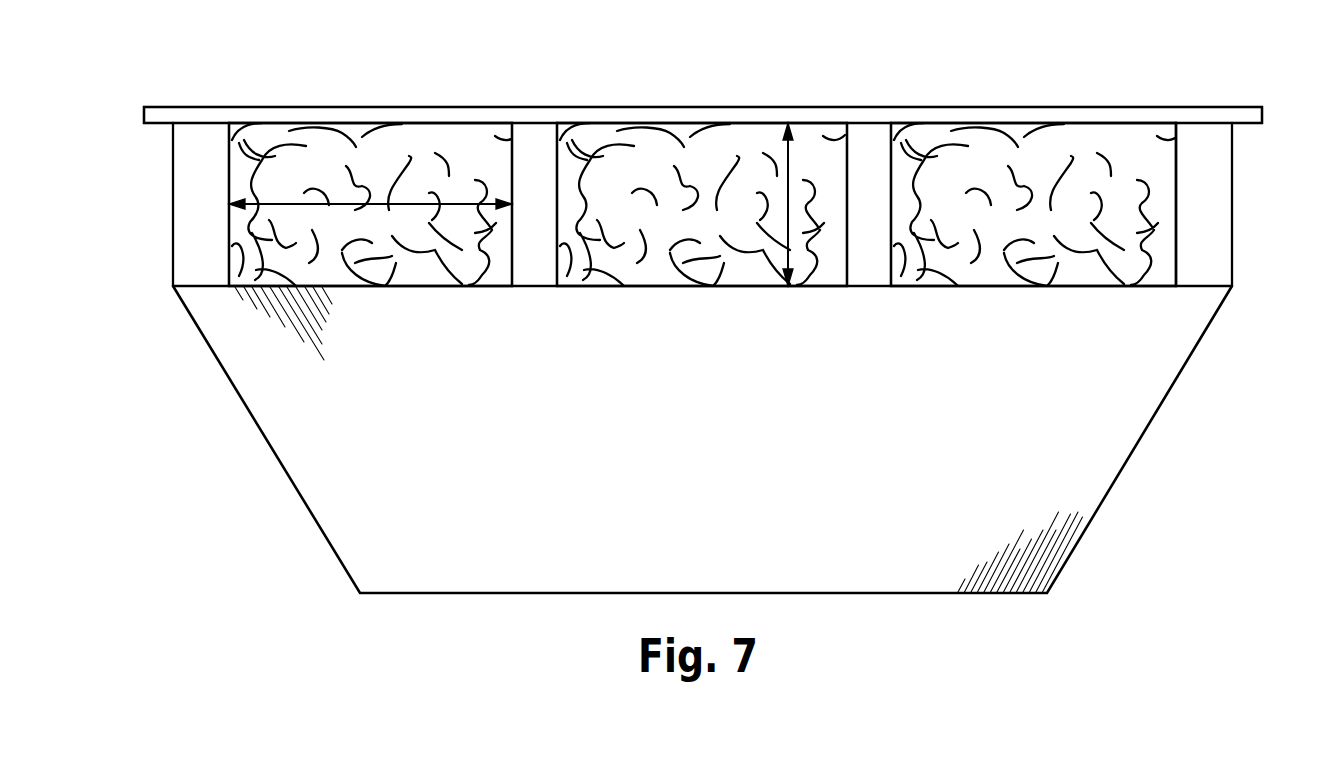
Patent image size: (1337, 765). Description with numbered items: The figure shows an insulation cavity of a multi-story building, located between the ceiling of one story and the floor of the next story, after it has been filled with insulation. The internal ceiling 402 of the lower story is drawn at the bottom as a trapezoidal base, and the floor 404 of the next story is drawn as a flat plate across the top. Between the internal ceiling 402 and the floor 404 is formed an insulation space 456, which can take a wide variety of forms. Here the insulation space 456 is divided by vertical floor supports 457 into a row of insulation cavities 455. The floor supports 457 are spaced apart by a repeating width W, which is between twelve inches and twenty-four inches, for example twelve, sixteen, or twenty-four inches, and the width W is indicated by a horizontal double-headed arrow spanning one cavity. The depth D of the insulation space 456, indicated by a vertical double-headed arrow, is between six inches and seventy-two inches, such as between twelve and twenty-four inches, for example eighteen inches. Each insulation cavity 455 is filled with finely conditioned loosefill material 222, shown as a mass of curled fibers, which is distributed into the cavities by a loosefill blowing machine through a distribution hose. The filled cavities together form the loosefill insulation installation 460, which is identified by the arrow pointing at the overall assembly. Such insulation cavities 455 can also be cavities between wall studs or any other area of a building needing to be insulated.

The loosefill insulation installation 460 is at (1112, 68).
The floor 404 is at (365, 122).
The internal ceiling 402 is at (298, 417).
The floor support 457 is at (192, 220).
The insulation space 456 is at (1165, 205).
The insulation cavity 455 is at (337, 263).
The loosefill material 222 is at (287, 162).
The repeating width W is at (417, 206).
The depth D is at (788, 205).